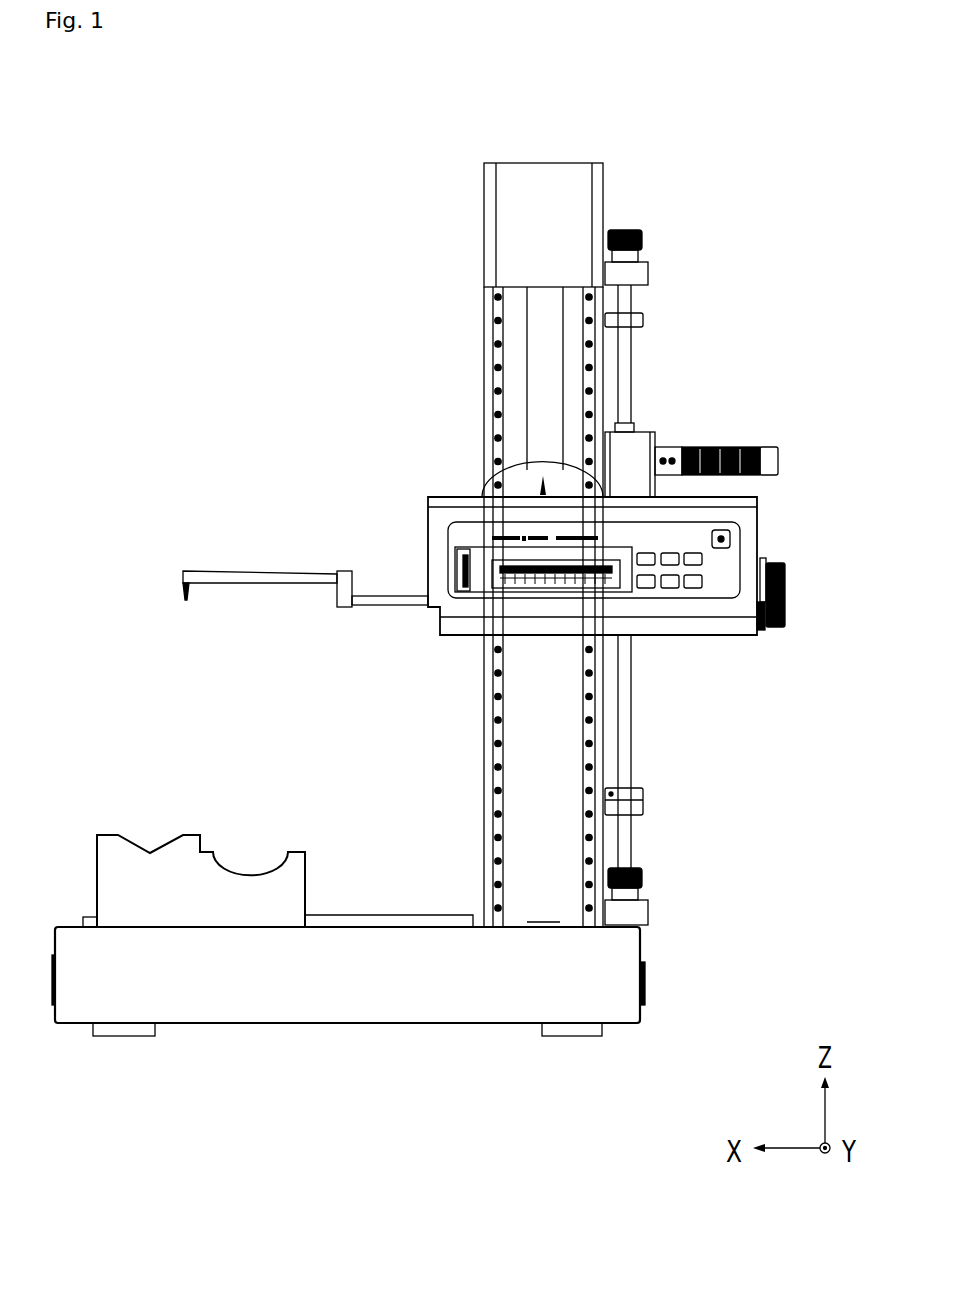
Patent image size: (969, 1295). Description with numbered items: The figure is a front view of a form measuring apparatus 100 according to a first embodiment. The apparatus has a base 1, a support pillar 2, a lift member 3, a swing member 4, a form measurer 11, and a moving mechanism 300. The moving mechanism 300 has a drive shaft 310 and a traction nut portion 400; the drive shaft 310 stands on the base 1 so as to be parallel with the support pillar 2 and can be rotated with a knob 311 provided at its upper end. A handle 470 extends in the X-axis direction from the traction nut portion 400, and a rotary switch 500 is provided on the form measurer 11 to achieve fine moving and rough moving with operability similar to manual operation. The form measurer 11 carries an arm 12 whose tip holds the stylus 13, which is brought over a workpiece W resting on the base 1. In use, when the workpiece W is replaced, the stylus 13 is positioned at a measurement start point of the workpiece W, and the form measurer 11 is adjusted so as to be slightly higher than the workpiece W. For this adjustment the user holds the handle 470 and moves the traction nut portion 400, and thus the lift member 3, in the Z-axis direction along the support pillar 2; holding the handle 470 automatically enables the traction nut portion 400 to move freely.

The surface texture measuring apparatus 100 is at (386, 147).
The base 1 is at (205, 1020).
The workpiece W is at (112, 845).
The moving mechanism 300 is at (734, 157).
The support pillar 2 is at (537, 340).
The knob 311 is at (628, 228).
The drive shaft 310 is at (622, 383).
The traction nut portion 400 is at (688, 396).
The handle 470 is at (768, 450).
The lift member 3 is at (436, 471).
The swing member 4 is at (497, 492).
The form measurer 11 is at (728, 607).
The rotary switch 500 is at (768, 558).
The stylus arm 12 is at (305, 580).
The stylus 13 is at (186, 598).